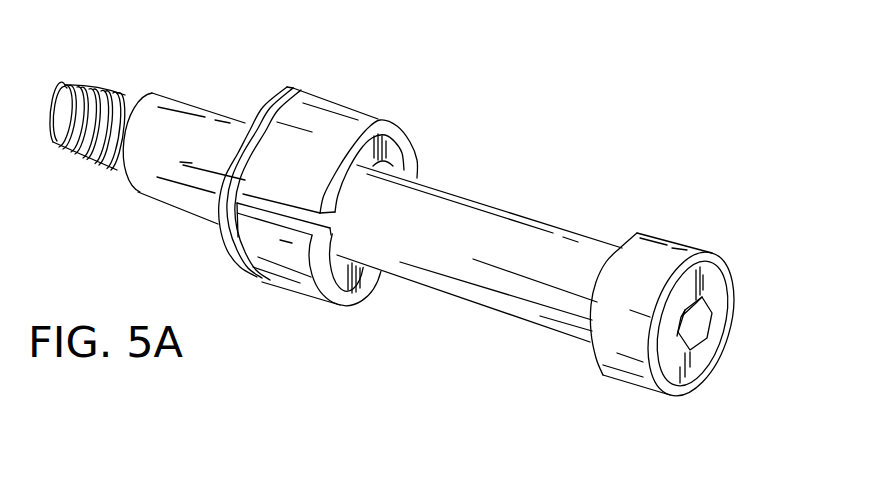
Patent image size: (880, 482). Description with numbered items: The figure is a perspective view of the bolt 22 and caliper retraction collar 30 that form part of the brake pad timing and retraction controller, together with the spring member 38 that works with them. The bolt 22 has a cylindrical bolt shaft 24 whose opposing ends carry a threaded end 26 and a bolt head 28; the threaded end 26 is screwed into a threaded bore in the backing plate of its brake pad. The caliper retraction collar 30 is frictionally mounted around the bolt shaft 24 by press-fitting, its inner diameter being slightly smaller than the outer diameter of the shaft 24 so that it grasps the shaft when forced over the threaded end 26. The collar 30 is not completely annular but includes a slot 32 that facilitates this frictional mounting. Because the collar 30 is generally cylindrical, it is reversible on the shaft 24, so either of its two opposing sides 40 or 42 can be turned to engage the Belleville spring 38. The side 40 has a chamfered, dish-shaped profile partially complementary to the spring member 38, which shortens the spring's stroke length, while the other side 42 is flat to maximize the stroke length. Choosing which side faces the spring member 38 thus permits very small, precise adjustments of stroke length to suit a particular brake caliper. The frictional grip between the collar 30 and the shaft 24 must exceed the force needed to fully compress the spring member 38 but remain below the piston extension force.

The bolt 22 is at (520, 188).
The bolt shaft 24 is at (483, 272).
The threaded end 26 is at (112, 86).
The bolt head 28 is at (698, 363).
The caliper retraction collar 30 is at (357, 110).
The slot 32 is at (280, 217).
The spring member 38 is at (295, 88).
The chamfered side 40 is at (230, 167).
The flat side 42 is at (367, 279).